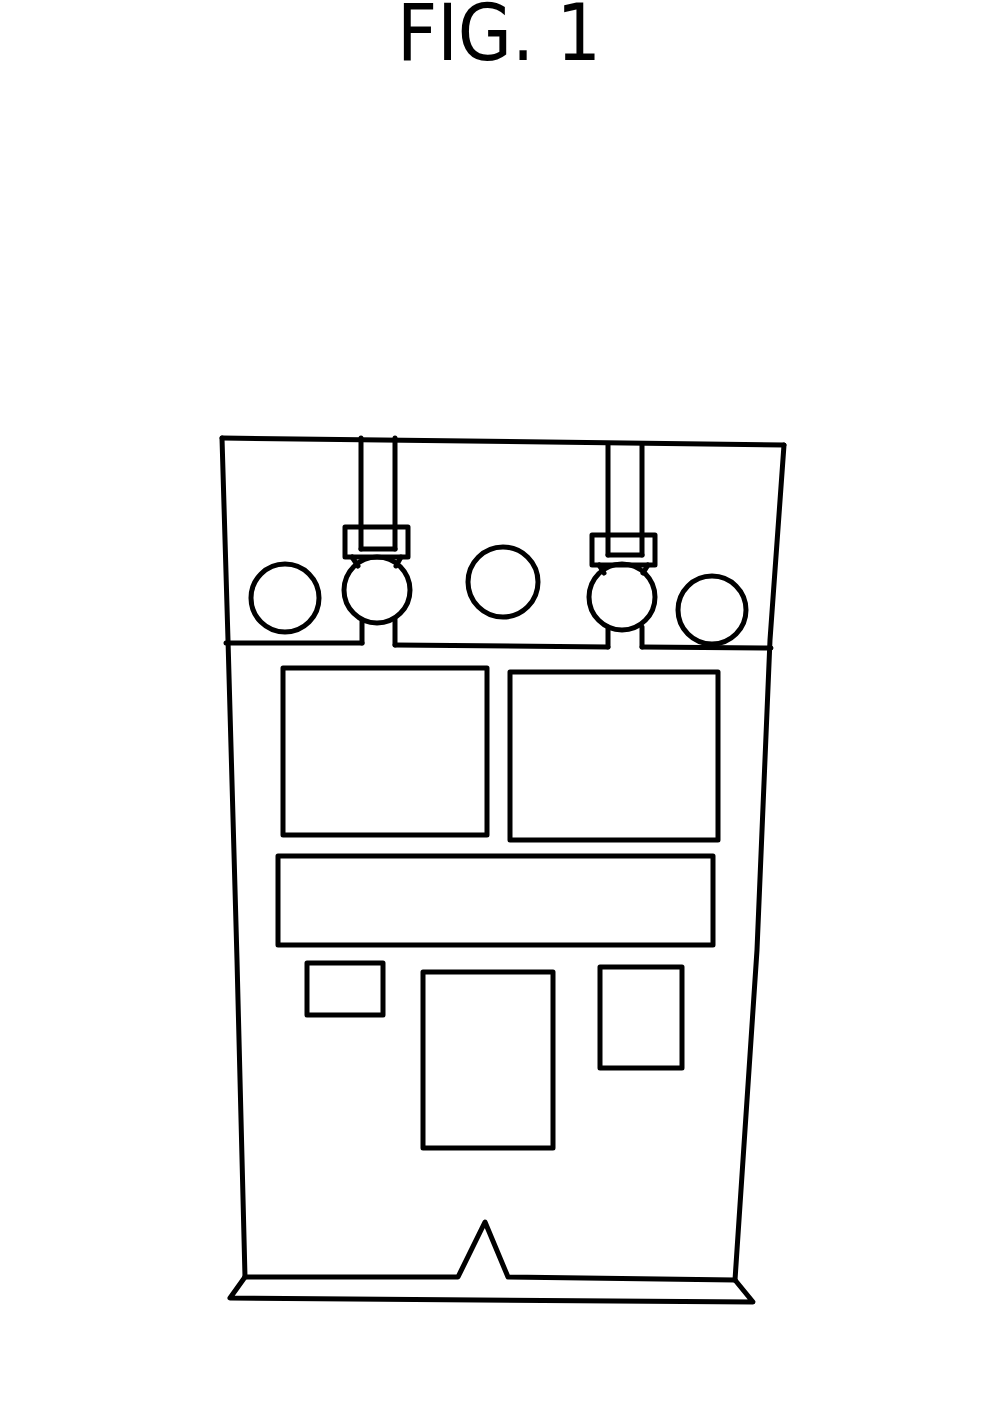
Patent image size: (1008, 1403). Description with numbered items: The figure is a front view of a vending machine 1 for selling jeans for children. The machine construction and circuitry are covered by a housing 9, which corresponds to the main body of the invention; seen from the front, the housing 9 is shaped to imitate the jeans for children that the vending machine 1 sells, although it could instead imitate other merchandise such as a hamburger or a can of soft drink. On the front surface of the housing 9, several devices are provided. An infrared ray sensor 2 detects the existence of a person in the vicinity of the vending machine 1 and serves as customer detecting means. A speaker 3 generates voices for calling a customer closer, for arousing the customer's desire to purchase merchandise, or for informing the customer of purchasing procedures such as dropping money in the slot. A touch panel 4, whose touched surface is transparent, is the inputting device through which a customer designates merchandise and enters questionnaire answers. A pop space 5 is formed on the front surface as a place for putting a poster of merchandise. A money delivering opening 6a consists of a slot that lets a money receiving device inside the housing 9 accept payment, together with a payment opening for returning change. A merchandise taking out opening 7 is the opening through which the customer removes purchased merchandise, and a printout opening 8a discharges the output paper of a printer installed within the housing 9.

The vending machine 1 is at (188, 468).
The infrared ray sensor 2 is at (498, 575).
The speaker 3 is at (277, 594).
The touch panel 4 is at (317, 767).
The pop space 5 is at (673, 908).
The money delivering opening 6a is at (653, 1023).
The merchandise taking out opening 7 is at (530, 1115).
The printout opening 8a is at (332, 988).
The housing 9 is at (687, 1208).